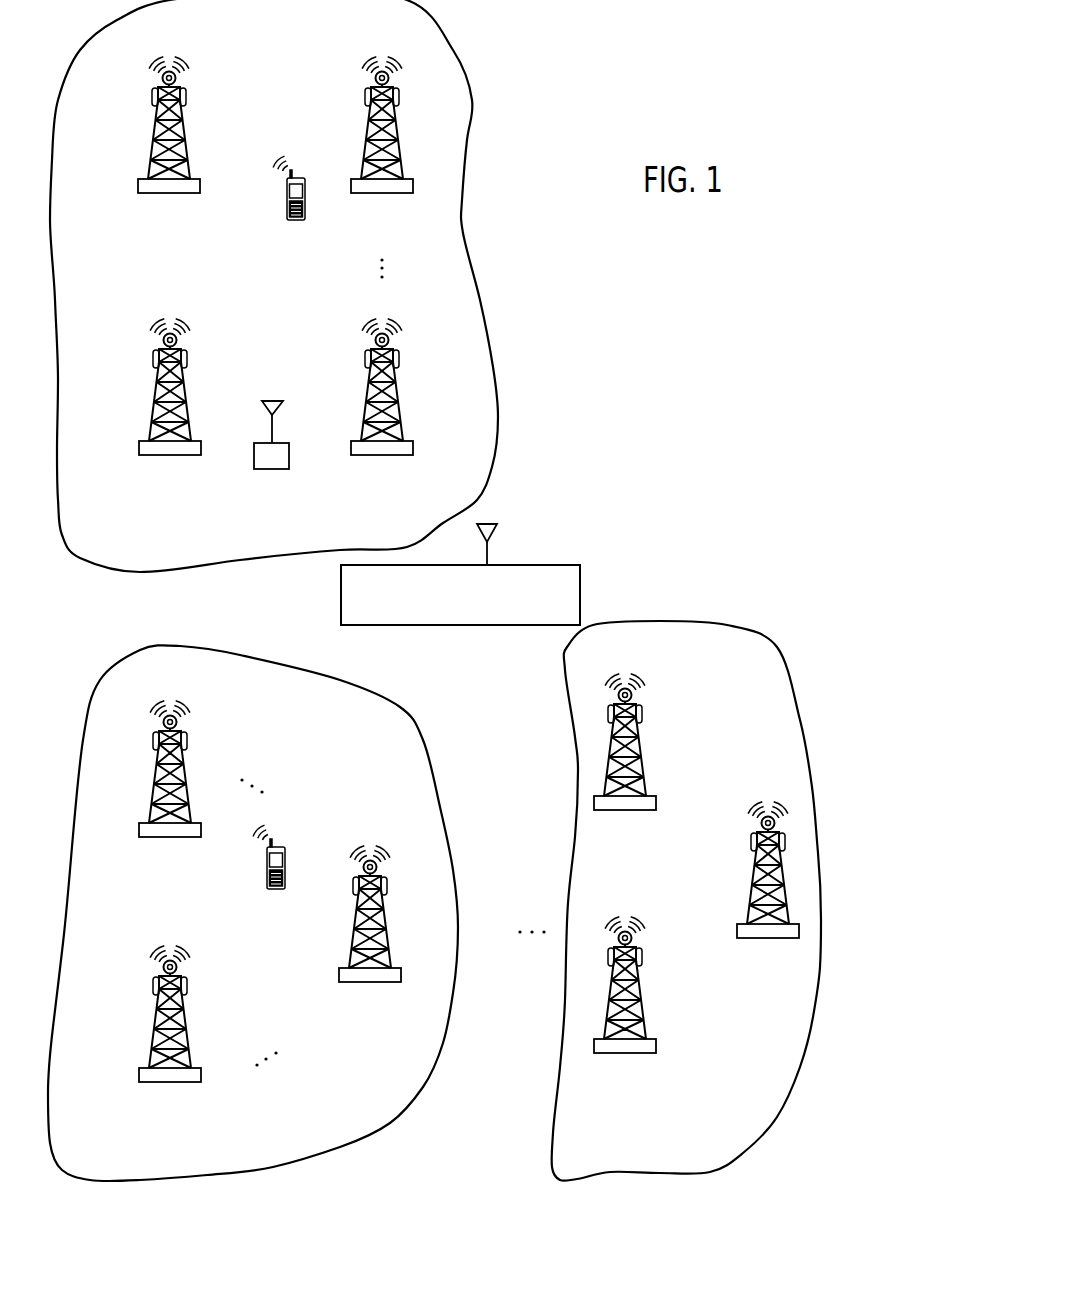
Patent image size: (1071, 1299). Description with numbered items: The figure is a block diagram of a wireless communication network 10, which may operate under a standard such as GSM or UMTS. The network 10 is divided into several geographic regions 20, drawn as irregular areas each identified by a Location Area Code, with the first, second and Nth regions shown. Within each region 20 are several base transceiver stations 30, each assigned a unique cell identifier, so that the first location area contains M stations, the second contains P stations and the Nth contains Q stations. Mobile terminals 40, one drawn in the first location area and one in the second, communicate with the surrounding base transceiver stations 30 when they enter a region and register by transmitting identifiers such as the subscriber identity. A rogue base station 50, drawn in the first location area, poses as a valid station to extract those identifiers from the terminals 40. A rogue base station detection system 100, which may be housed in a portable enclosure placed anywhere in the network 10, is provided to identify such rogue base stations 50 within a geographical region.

The wireless communication network 10 is at (730, 86).
The geographic regions 20 is at (471, 61).
The base transceiver stations (BTS) 30 is at (155, 100).
The mobile terminals (MT) 40 is at (292, 177).
The rogue base station 50 is at (281, 442).
The rogue base station detection system 100 is at (581, 590).